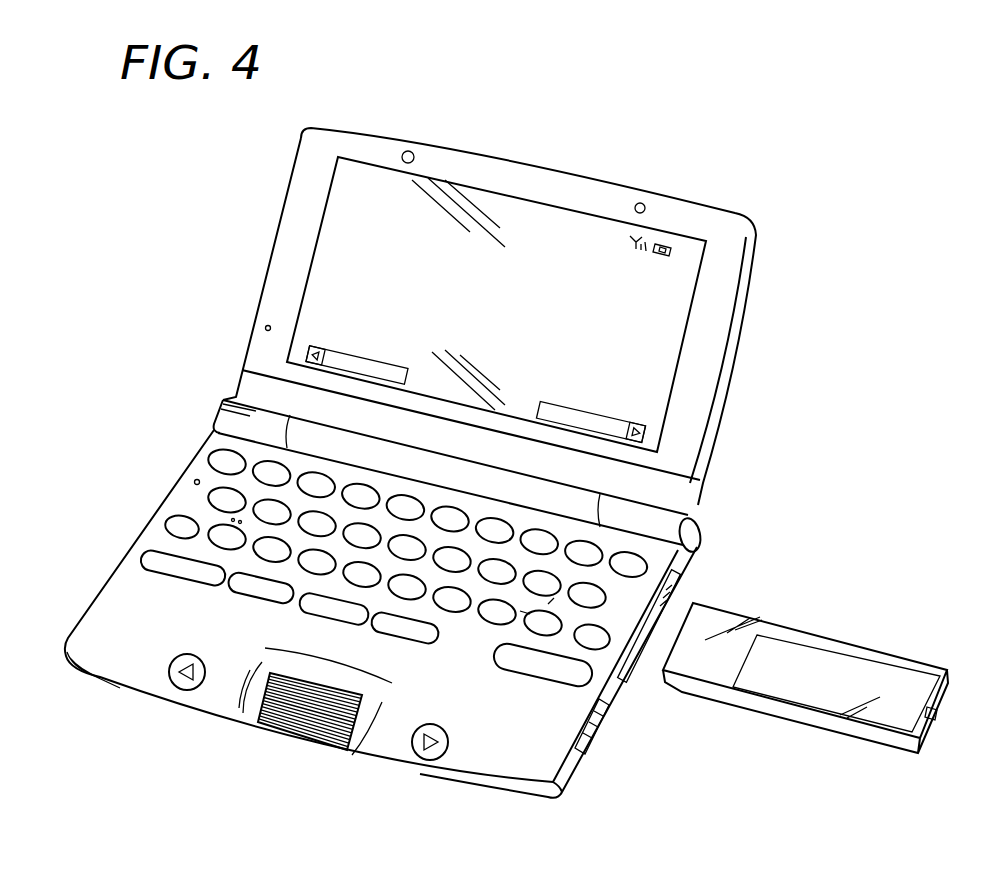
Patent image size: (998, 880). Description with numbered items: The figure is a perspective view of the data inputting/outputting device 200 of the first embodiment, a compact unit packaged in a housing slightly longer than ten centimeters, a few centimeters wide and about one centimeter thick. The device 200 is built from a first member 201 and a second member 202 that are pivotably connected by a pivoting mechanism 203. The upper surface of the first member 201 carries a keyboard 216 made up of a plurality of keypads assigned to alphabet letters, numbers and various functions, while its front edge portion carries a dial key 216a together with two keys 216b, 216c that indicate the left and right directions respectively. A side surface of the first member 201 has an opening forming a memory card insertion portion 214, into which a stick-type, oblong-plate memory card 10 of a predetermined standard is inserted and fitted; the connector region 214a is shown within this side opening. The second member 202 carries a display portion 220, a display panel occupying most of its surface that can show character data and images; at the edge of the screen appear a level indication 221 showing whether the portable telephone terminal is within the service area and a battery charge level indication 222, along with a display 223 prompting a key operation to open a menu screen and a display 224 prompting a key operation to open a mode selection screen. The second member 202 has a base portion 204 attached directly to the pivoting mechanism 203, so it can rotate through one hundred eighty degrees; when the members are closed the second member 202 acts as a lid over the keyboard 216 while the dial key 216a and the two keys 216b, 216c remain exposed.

The memory card 10 is at (783, 710).
The data inputting/outputting device 200 is at (131, 695).
The first member 201 is at (513, 777).
The second member 202 is at (735, 362).
The pivoting mechanism 203 is at (688, 530).
The base portion 204 is at (695, 490).
The memory card insertion portion 214 is at (633, 677).
The connector terminal 214a is at (593, 748).
The keyboard 216 is at (96, 563).
The dial key 216a is at (323, 733).
The left direction key 216b is at (202, 690).
The right direction key 216c is at (427, 755).
The display portion 220 is at (540, 237).
The level indication 221 is at (653, 237).
The battery charge level indication 222 is at (700, 247).
The menu display 223 is at (363, 353).
The mode selection display 224 is at (603, 413).